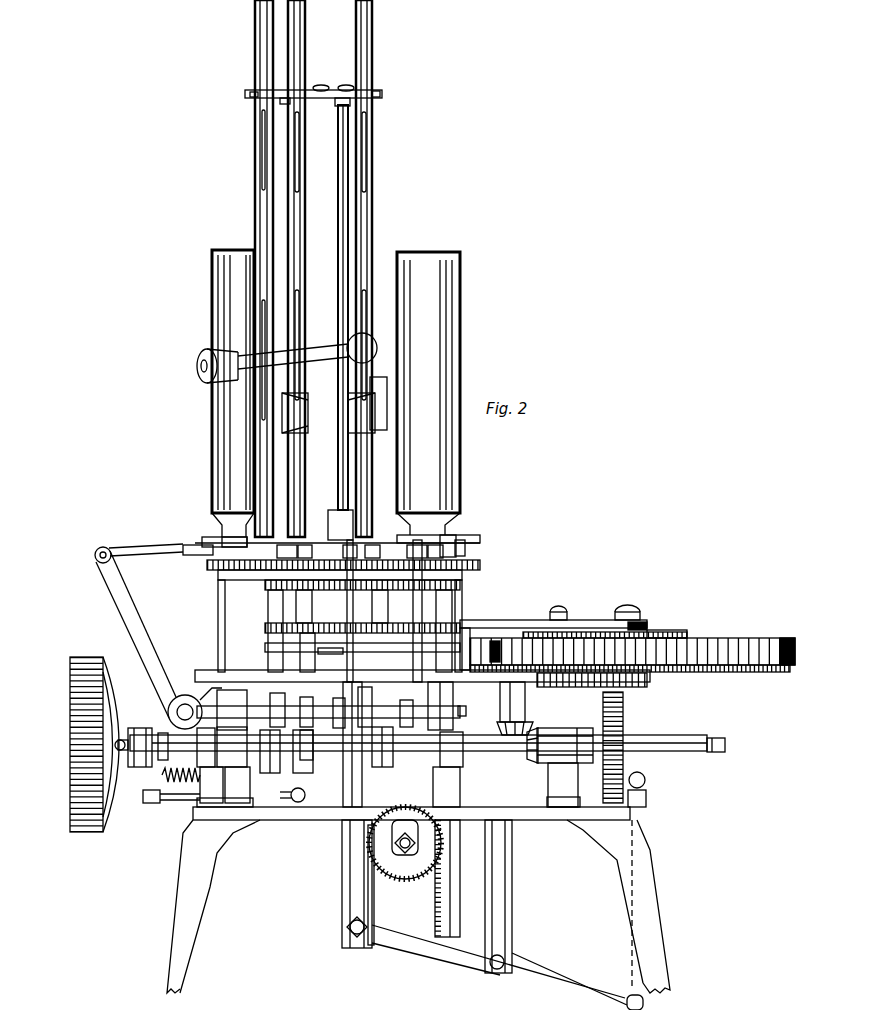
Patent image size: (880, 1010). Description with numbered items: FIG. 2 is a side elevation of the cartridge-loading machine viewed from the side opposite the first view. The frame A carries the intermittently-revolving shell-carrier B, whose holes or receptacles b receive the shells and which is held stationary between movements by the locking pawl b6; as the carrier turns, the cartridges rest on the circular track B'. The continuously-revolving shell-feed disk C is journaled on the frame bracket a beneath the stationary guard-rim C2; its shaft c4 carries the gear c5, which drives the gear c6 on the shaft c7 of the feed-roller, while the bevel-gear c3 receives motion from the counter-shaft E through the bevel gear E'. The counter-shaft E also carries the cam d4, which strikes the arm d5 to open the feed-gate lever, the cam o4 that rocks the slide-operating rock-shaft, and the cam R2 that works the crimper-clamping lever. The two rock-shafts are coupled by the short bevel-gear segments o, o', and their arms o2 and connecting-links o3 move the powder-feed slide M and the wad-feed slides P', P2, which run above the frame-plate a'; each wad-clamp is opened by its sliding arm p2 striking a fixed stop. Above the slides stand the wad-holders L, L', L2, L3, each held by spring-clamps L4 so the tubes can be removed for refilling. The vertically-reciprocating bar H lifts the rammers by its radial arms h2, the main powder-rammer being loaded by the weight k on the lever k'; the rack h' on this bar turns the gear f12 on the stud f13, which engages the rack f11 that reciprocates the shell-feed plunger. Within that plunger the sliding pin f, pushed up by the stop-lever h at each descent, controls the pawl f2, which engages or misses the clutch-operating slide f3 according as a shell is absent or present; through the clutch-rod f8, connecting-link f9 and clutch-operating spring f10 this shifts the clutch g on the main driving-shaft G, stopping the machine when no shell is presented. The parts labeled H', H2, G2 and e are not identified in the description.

The wad-holder L is at (376, 268).
The wad-holder L' is at (302, 268).
The wad-holder L2 is at (255, 166).
The wad-holder L3 is at (382, 94).
The spring-clamp L4 is at (245, 92).
The lever h is at (499, 965).
The vertically-reciprocating bar H is at (331, 526).
The cylinder H' is at (438, 397).
The cylinder H2 is at (215, 328).
The rack h' is at (343, 885).
The radial arm h2 is at (348, 404).
The weight k is at (271, 358).
The lever k' is at (286, 400).
The sliding arm p2 is at (183, 548).
The wad-feed slide P2 is at (225, 560).
The wad-feed slide P' is at (267, 572).
The connecting-link o3 is at (300, 545).
The powder-feed slide M is at (455, 538).
The frame-plate a' is at (350, 565).
The frame bracket a is at (553, 632).
The shell-carrier B is at (340, 621).
The circular track B' is at (425, 611).
The shell-receptacle b is at (290, 620).
The locking pawl b6 is at (395, 648).
The arm o2 is at (130, 604).
The frame A is at (408, 614).
The gear c6 is at (540, 632).
The shaft c7 is at (565, 616).
The shaft c4 is at (628, 616).
The gear c5 is at (670, 635).
The stationary rim C2 is at (720, 645).
The shell-feed disk C is at (725, 670).
The bevel-gear o' is at (195, 687).
The main driving-shaft G is at (175, 745).
The shaft G2 is at (660, 738).
The clutch g is at (145, 768).
The cam o4 is at (272, 773).
The pawl f2 is at (350, 752).
The cam R2 is at (393, 762).
The cam d4 is at (463, 760).
The bevel gear E' is at (519, 759).
The bevel-gear c3 is at (500, 728).
The arm d5 is at (470, 708).
The bearing e is at (540, 728).
The bevel-gear o is at (410, 742).
The clutch-operating spring f10 is at (180, 785).
The clutch-rod f8 is at (172, 803).
The connecting-link f9 is at (240, 808).
The counter-shaft E is at (411, 807).
The gear f12 is at (405, 850).
The stud f13 is at (415, 843).
The rack f11 is at (445, 880).
The clutch-operating slide f3 is at (455, 896).
The sliding pin f is at (455, 936).